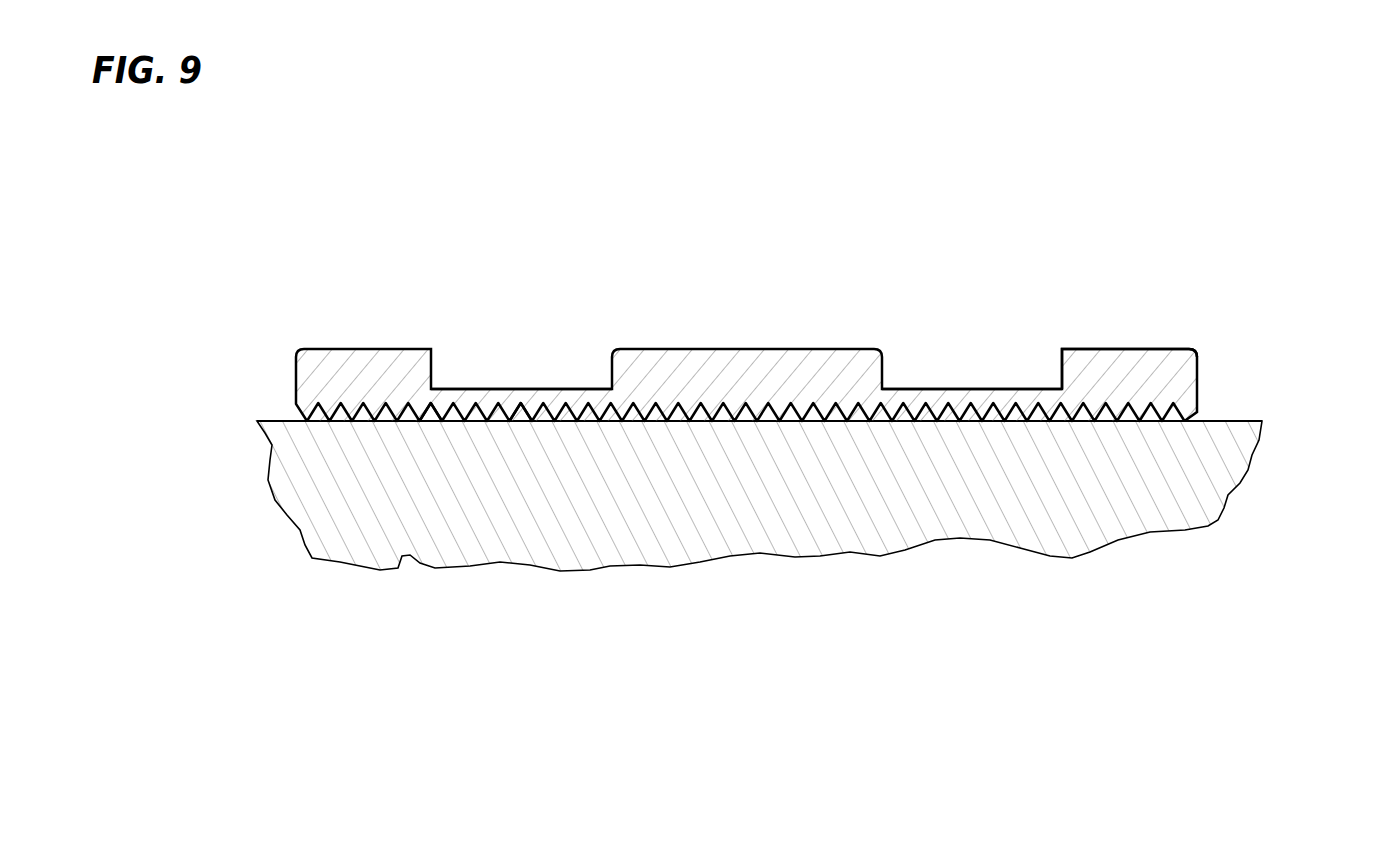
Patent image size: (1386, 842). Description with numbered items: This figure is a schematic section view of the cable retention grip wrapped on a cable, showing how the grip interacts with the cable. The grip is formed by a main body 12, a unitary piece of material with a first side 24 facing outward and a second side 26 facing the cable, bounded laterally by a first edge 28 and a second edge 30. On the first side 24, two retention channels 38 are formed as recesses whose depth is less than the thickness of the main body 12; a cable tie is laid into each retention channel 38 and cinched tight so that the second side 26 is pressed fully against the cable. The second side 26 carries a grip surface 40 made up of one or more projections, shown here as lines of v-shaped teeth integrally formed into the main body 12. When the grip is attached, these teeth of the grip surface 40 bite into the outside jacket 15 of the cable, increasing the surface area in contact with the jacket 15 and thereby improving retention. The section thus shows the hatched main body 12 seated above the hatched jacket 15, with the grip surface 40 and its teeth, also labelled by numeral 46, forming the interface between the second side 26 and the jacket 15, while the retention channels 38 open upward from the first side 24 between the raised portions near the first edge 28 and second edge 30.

The main body 12 is at (1148, 360).
The outside jacket 15 is at (1222, 463).
The first side 24 is at (728, 349).
The second side 26 is at (328, 410).
The first edge 28 is at (1207, 378).
The second edge 30 is at (295, 382).
The retention channels 38 is at (507, 353).
The grip surface 40 is at (529, 412).
The tooth projection 46 is at (432, 412).